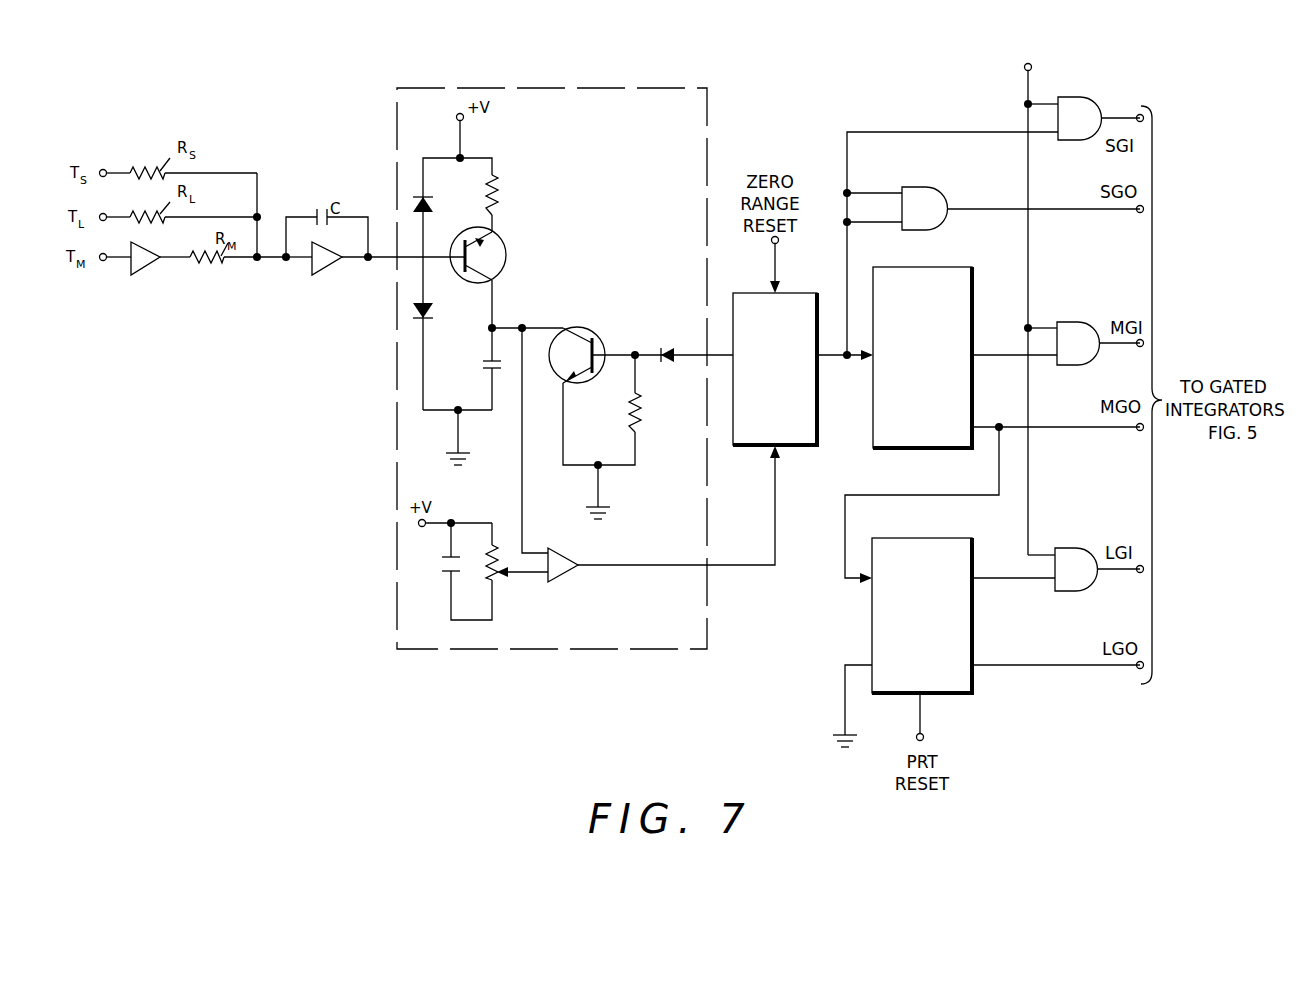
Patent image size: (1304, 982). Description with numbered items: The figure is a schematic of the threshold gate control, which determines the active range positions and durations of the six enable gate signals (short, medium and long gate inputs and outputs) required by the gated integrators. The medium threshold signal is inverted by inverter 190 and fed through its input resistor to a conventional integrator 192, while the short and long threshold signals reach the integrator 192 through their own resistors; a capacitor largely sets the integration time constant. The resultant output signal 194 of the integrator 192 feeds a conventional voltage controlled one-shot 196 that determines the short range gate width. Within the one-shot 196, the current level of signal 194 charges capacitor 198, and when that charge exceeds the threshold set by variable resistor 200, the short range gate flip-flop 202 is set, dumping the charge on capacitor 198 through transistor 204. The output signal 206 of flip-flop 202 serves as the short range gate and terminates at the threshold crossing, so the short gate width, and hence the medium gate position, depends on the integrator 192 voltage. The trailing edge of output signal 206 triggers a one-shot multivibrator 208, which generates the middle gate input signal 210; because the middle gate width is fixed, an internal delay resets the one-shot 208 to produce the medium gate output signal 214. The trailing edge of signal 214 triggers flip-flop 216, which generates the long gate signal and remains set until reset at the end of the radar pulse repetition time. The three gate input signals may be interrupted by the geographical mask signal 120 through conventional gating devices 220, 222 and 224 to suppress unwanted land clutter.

The geographical mask signal 120 is at (1026, 92).
The inverter 190 is at (135, 276).
The integrator 192 is at (327, 268).
The output signal 194 is at (379, 261).
The voltage controlled one-shot 196 is at (458, 87).
The capacitor 198 is at (487, 358).
The variable resistor 200 is at (496, 581).
The short range gate flip-flop 202 is at (751, 291).
The transistor 204 is at (592, 327).
The output signal 206 is at (832, 360).
The one-shot multivibrator 208 is at (869, 424).
The middle gate input signal 210 is at (1020, 357).
The medium gate output signal 214 is at (1020, 427).
The flip-flop 216 is at (898, 538).
The gating device 220 is at (1083, 95).
The gating device 222 is at (1082, 322).
The gating device 224 is at (1083, 539).